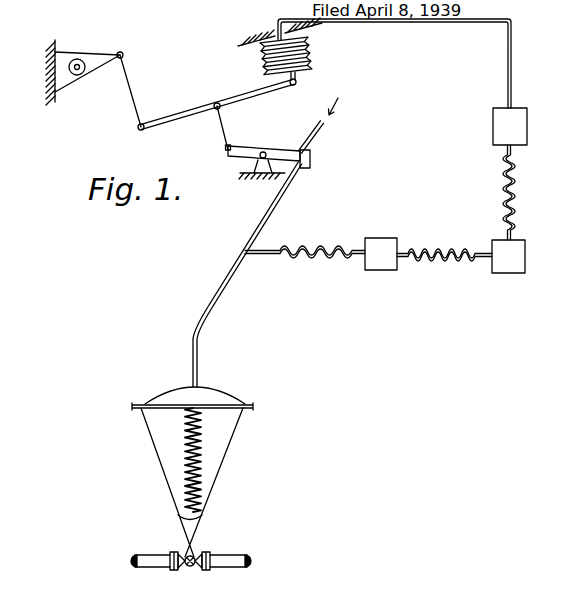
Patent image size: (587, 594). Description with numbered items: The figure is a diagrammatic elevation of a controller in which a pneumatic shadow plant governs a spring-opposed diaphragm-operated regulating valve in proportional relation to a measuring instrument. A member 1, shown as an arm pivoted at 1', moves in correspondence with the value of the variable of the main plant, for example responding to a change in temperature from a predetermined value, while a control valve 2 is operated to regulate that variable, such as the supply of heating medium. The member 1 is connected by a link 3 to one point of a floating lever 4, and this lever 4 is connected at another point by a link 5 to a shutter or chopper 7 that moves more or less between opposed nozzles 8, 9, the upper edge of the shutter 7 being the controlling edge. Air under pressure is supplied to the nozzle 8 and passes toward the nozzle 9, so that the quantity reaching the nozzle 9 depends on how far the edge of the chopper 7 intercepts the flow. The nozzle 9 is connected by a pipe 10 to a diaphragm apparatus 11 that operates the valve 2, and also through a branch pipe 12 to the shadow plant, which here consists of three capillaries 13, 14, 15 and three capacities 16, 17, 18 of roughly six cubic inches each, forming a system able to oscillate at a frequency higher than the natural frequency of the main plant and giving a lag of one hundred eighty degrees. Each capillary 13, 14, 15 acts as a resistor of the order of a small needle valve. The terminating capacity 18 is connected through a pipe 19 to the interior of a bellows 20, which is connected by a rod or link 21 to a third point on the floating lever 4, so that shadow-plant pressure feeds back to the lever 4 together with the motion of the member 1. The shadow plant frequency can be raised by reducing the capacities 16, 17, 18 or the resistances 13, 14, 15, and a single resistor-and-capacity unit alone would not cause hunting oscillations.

The member 1 is at (84, 70).
The pivot 1' is at (76, 84).
The control valve 2 is at (191, 573).
The link 3 is at (134, 97).
The floating lever 4 is at (199, 110).
The link 5 is at (222, 133).
The shutter or chopper 7 is at (282, 150).
The nozzle 8 is at (314, 144).
The nozzle 9 is at (303, 170).
The pipe 10 is at (247, 236).
The diaphragm apparatus 11 is at (221, 480).
The branch pipe 12 is at (270, 256).
The capillary 13 is at (327, 247).
The capillary 14 is at (447, 253).
The capillary 15 is at (514, 198).
The capacity 16 is at (382, 245).
The capacity 17 is at (517, 263).
The capacity 18 is at (512, 133).
The pipe 19 is at (512, 58).
The bellows 20 is at (308, 50).
The rod or link 21 is at (297, 80).